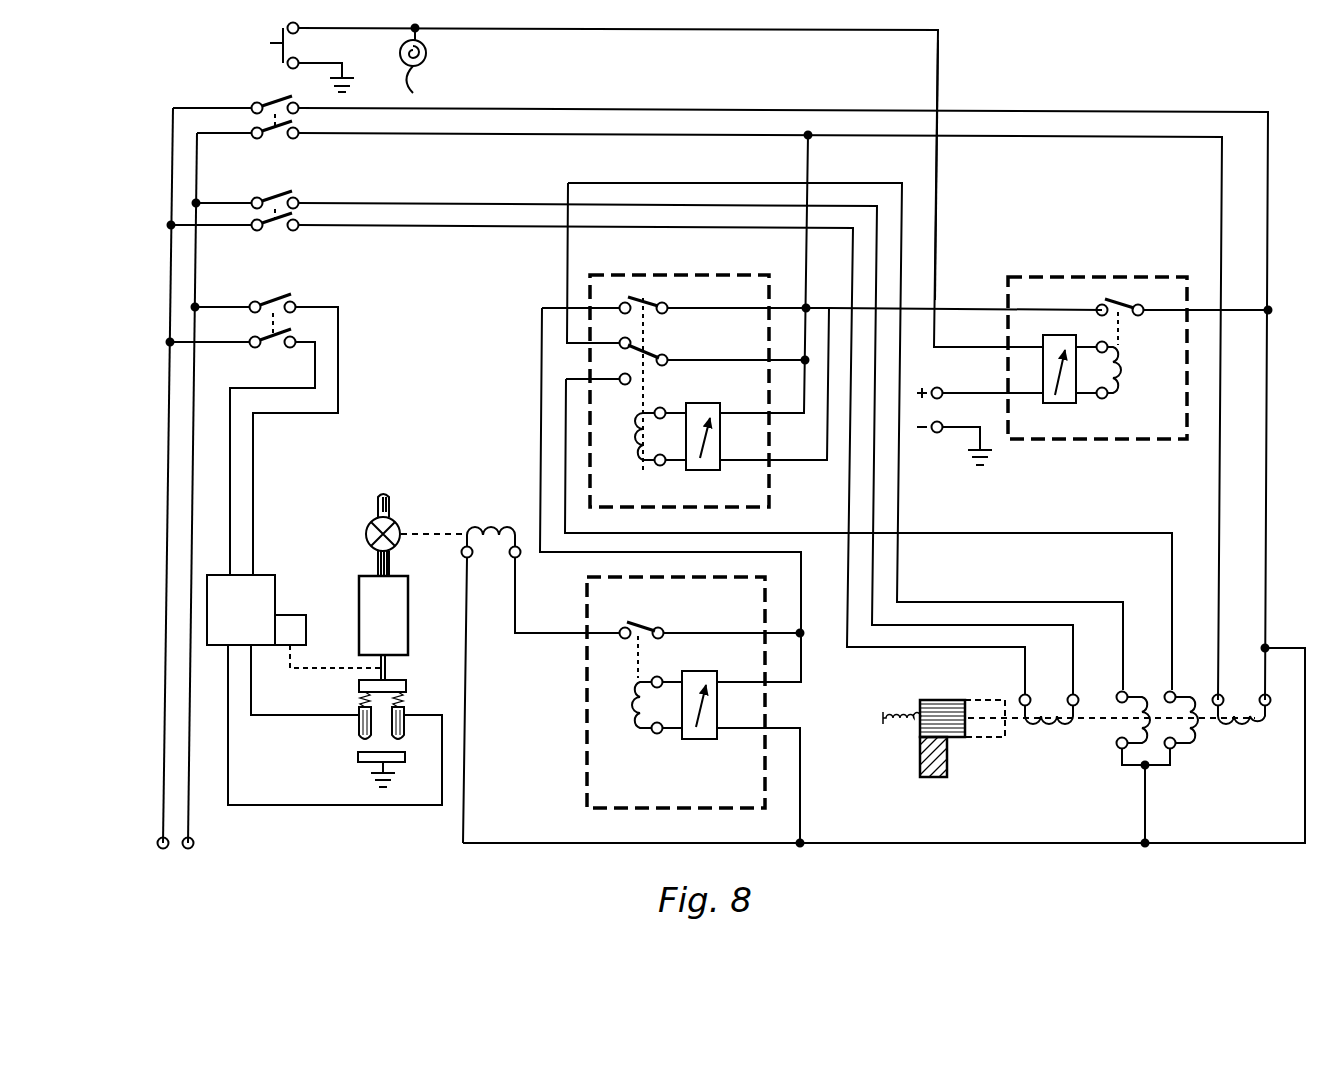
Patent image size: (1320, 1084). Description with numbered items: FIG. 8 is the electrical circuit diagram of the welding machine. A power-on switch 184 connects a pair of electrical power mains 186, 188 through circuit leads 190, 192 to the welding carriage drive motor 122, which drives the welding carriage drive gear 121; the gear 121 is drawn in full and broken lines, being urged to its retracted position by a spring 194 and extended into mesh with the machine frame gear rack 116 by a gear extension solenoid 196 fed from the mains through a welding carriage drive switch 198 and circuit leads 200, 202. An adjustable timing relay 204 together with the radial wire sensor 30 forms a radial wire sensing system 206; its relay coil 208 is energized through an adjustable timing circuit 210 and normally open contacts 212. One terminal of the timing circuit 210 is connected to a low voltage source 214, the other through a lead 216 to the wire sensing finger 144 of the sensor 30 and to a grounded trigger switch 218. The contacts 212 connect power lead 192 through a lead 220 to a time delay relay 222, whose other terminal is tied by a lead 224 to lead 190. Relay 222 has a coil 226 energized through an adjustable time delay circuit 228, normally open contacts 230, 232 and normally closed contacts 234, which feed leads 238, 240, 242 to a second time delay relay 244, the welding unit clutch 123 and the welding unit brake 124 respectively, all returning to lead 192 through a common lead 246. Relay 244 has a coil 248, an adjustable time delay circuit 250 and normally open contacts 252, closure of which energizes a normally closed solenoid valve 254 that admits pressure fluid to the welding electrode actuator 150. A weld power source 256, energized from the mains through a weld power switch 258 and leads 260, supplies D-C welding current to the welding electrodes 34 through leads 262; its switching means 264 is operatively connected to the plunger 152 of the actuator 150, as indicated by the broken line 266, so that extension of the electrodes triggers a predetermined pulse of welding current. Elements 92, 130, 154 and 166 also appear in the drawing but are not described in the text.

The radial wire sensor 30 is at (430, 53).
The welding electrodes 34 is at (359, 728).
The ground plate 92 is at (358, 757).
The machine frame gear rack 116 is at (920, 753).
The welding carriage drive gear 121 is at (990, 700).
The welding carriage drive motor 122 is at (1251, 725).
The welding unit clutch 123 is at (1142, 697).
The welding unit brake 124 is at (1191, 745).
The control circuit 130 is at (137, 285).
The wire sensing finger 144 is at (413, 84).
The welding electrode actuator 150 is at (352, 627).
The plunger 152 is at (388, 668).
The cross bar 154 is at (359, 685).
The indicator lamp 166 is at (390, 562).
The power-on switch 184 is at (283, 96).
The electrical power main 186 is at (171, 452).
The electrical power main 188 is at (195, 490).
The circuit power lead 190 is at (475, 138).
The circuit power lead 192 is at (615, 109).
The spring 194 is at (897, 709).
The gear extension solenoid 196 is at (1041, 725).
The welding carriage drive switch 198 is at (288, 193).
The circuit lead 200 is at (413, 236).
The circuit lead 202 is at (412, 202).
The adjustable timing relay 204 is at (1138, 358).
The radial wire sensing system 206 is at (944, 56).
The relay coil 208 is at (1122, 373).
The adjustable timing circuit 210 is at (1060, 403).
The normally open contacts 212 is at (1102, 300).
The low voltage source 214 is at (918, 446).
The lead 216 is at (938, 70).
The trigger switch 218 is at (283, 30).
The lead 220 is at (970, 305).
The time delay relay 222 is at (709, 391).
The lead 224 is at (808, 156).
The relay coil 226 is at (630, 450).
The adjustable time delay circuit 228 is at (706, 470).
The normally open contacts 230 is at (637, 297).
The normally open contacts 232 is at (643, 379).
The normally closed contacts 234 is at (644, 340).
The lead 238 is at (542, 358).
The lead 240 is at (568, 256).
The lead 242 is at (566, 430).
The second time delay relay 244 is at (662, 710).
The common lead 246 is at (993, 841).
The relay coil 248 is at (632, 716).
The adjustable time delay circuit 250 is at (700, 739).
The normally open contacts 252 is at (628, 626).
The normally closed solenoid valve 254 is at (429, 526).
The weld power source 256 is at (241, 610).
The weld power switch 258 is at (280, 294).
The leads 260 is at (253, 468).
The leads 262 is at (228, 738).
The switching means 264 is at (291, 615).
The broken line 266 is at (330, 666).